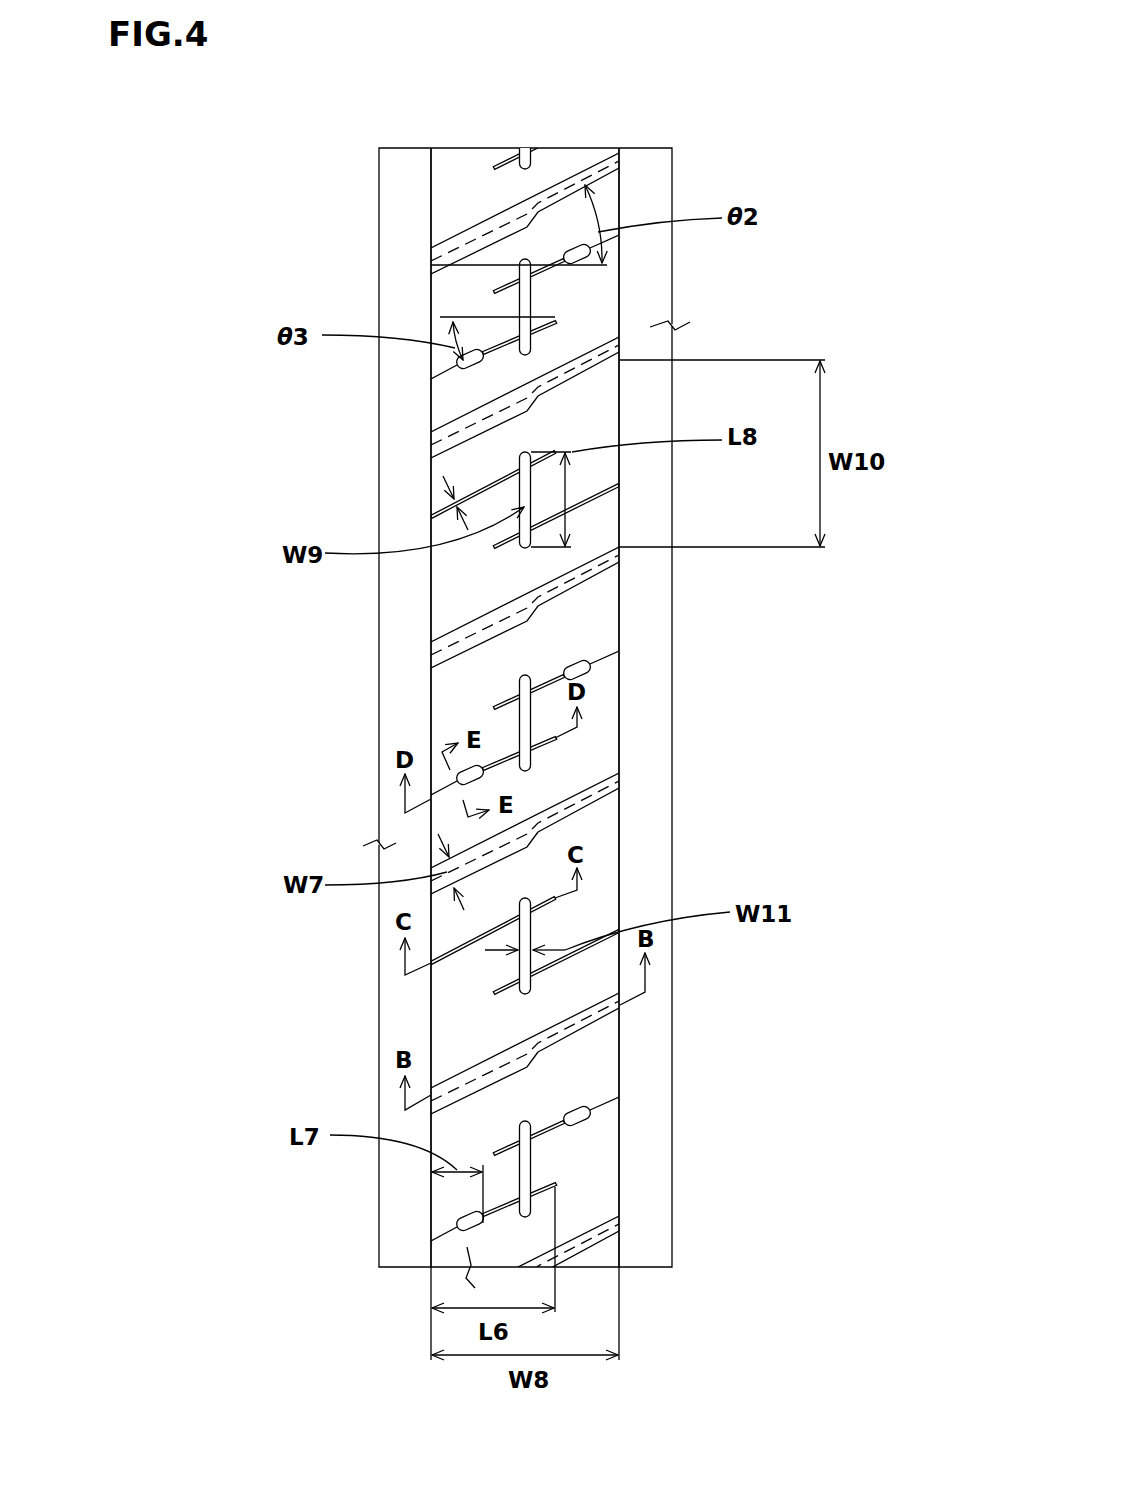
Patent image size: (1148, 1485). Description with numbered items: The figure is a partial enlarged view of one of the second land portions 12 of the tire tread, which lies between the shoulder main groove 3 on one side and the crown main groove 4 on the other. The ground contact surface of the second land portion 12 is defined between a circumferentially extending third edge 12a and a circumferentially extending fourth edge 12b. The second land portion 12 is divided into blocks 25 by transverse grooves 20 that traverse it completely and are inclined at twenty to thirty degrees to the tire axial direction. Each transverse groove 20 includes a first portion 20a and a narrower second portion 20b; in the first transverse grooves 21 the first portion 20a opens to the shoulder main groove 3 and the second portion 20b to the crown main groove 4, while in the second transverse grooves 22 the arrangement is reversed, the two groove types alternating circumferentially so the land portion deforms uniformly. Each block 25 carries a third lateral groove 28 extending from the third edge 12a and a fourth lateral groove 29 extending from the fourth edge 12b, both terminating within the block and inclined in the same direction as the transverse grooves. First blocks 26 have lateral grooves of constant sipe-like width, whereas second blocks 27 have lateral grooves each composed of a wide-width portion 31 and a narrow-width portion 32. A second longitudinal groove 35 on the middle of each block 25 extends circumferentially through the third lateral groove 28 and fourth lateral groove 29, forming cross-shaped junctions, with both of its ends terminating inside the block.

The shoulder main groove 3 is at (406, 183).
The crown main groove 4 is at (645, 183).
The second land portion 12 is at (484, 200).
The third edge 12a is at (430, 228).
The fourth edge 12b is at (621, 293).
The transverse groove 20 is at (521, 215).
The first portion 20a is at (495, 855).
The second portion 20b is at (570, 811).
The first transverse groove 21 is at (780, 1030).
The second transverse groove 22 is at (780, 712).
The block 25 is at (283, 655).
The first block 26 is at (442, 628).
The second block 27 is at (470, 710).
The third lateral groove 28 is at (459, 1229).
The fourth lateral groove 29 is at (590, 498).
The wide-width portion 31 is at (457, 372).
The narrow-width portion 32 is at (497, 352).
The second longitudinal groove 35 is at (518, 302).